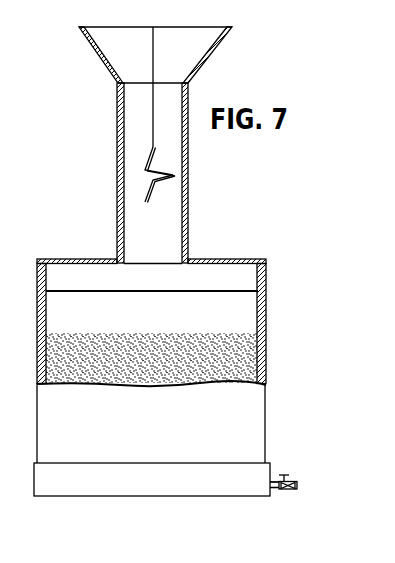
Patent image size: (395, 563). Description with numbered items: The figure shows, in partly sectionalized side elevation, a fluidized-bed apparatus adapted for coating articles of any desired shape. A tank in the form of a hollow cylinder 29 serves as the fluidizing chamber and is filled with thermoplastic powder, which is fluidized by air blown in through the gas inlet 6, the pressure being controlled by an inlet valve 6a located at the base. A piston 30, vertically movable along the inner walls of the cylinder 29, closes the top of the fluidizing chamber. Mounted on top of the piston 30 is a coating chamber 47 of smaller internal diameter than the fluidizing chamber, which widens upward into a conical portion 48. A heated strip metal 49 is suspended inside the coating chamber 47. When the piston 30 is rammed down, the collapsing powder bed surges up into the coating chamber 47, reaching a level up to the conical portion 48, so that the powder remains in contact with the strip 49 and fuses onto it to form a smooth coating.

The conical portion 48 is at (122, 52).
The strip metal 49 is at (152, 149).
The coating chamber 47 is at (189, 216).
The piston member 30 is at (237, 291).
The hollow cylinder 29 is at (252, 412).
The inlet means 6 is at (298, 483).
The inlet valve 6a is at (286, 490).